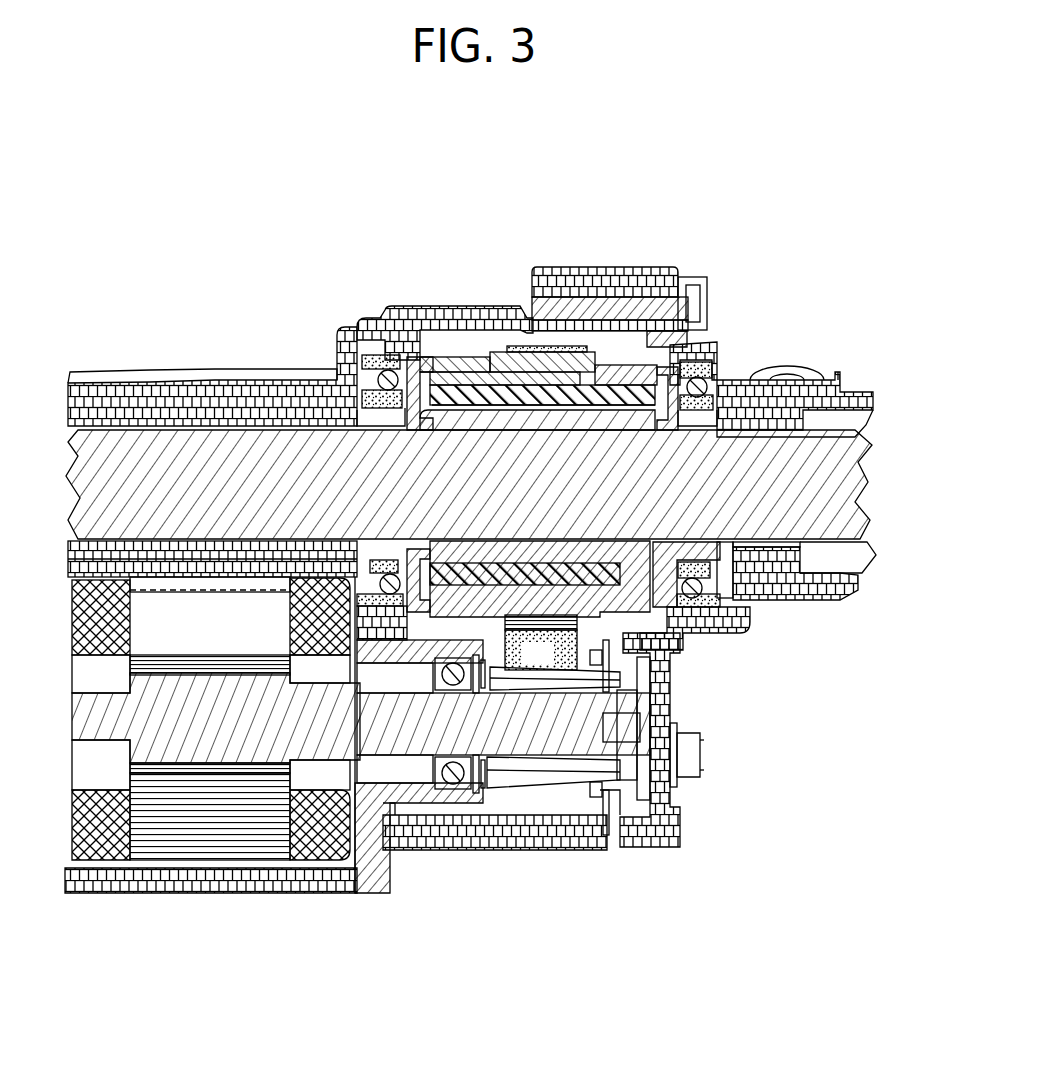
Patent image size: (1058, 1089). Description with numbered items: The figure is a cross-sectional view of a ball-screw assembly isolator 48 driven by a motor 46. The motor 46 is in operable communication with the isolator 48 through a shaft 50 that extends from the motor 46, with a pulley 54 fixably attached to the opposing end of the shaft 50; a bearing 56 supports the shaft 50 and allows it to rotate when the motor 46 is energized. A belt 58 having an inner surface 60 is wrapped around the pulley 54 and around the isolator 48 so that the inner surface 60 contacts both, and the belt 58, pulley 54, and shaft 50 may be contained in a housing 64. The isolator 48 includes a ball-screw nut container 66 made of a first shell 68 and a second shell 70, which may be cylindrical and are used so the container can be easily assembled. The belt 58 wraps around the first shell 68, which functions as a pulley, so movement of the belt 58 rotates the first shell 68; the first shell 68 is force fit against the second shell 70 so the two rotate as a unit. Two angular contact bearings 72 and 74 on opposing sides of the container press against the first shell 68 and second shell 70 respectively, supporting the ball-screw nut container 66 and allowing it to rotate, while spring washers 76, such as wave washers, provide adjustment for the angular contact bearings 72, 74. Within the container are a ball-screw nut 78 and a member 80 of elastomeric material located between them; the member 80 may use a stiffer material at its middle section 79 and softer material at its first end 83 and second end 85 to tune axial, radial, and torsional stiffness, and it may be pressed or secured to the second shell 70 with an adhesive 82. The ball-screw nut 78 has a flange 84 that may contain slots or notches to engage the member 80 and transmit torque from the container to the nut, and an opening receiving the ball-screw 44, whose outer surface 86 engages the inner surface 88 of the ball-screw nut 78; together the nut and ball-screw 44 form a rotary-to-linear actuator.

The ball-screw 44 is at (160, 452).
The motor 46 is at (203, 857).
The ball-screw assembly isolator 48 is at (668, 340).
The shaft 50 is at (410, 725).
The pulley 54 is at (570, 770).
The bearing 56 is at (450, 790).
The belt 58 is at (592, 664).
The inner surface 60 is at (541, 642).
The housing 64 is at (657, 832).
The ball-screw nut container 66 is at (450, 340).
The first shell 68 is at (468, 352).
The second shell 70 is at (640, 400).
The angular contact bearing 72 is at (386, 358).
The angular contact bearing 74 is at (703, 356).
The spring washers 76 is at (362, 362).
The ball-screw nut 78 is at (555, 378).
The middle section 79 is at (560, 300).
The member 80 is at (605, 398).
The adhesive 82 is at (640, 592).
The first end 83 is at (415, 358).
The flange 84 is at (541, 550).
The second end 85 is at (672, 282).
The outer surface 86 is at (352, 408).
The inner surface 88 is at (492, 382).